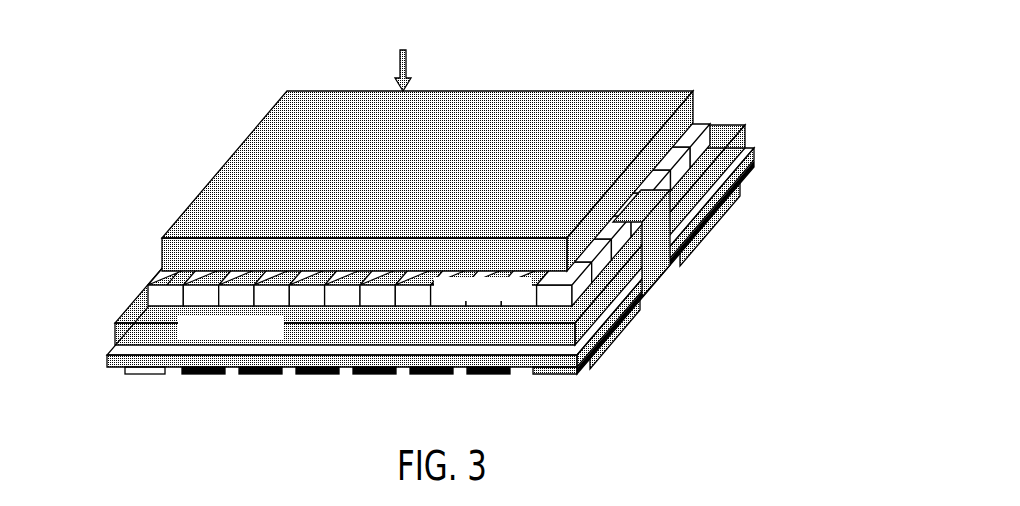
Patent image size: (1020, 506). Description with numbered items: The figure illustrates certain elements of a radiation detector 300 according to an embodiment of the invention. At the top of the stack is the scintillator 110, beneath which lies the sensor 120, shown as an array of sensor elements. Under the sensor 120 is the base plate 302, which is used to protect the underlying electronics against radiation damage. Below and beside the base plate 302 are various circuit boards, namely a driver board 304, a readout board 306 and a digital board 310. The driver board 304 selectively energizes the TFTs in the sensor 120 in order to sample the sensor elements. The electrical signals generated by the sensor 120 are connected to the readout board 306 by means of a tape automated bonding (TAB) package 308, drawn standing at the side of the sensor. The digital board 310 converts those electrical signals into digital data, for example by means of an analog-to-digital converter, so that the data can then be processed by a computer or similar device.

The radiation detector 300 is at (172, 27).
The scintillator 110 is at (524, 102).
The sensor 120 is at (144, 278).
The base plate 302 is at (108, 334).
The driver board 304 is at (425, 376).
The readout board 306 is at (595, 367).
The tape automated bonding (TAB) package 308 is at (665, 285).
The digital board 310 is at (752, 171).